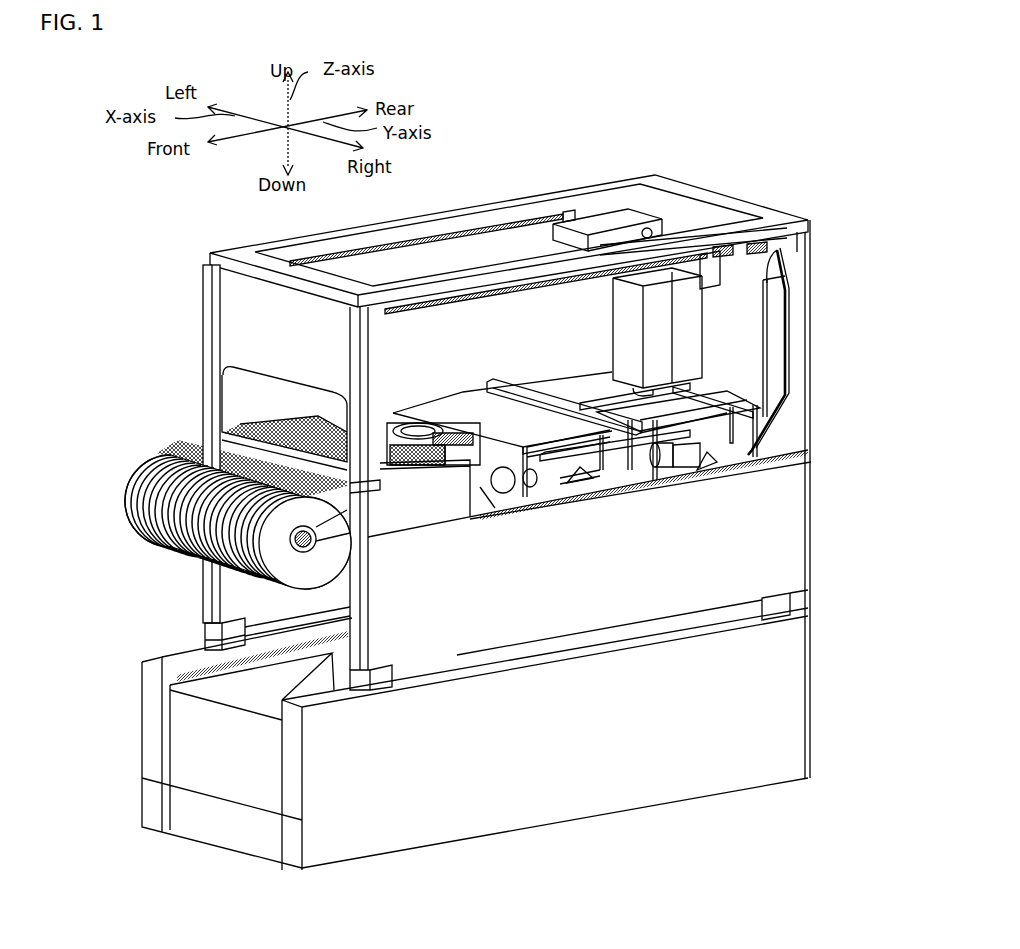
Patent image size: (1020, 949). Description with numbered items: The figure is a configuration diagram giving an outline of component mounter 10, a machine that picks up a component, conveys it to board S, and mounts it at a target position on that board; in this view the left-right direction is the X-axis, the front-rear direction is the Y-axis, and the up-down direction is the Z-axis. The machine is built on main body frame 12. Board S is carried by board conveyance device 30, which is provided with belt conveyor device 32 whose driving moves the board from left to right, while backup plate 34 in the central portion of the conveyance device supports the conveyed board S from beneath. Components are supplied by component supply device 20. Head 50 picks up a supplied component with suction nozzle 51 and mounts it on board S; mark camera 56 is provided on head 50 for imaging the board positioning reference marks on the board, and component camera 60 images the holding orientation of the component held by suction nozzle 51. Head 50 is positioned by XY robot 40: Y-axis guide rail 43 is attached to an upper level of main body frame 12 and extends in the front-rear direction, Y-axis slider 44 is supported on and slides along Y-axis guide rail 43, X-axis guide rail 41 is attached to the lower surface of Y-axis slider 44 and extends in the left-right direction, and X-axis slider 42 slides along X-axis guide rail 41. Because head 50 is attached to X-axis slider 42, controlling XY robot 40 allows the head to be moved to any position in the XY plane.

The component mounter 10 is at (744, 173).
The main body frame 12 is at (236, 252).
The component supply device 20 is at (130, 485).
The board conveyance device 30 is at (755, 470).
The belt conveyor device 32 is at (737, 424).
The backup plate 34 is at (747, 452).
The XY robot 40 is at (528, 238).
The X-axis guide rail 41 is at (777, 270).
The X-axis slider 42 is at (743, 340).
The Y-axis guide rail 43 is at (467, 296).
The Y-axis slider 44 is at (607, 229).
The head 50 is at (625, 331).
The suction nozzle 51 is at (645, 398).
The mark camera 56 is at (745, 376).
The component camera 60 is at (412, 423).
The board S is at (517, 407).